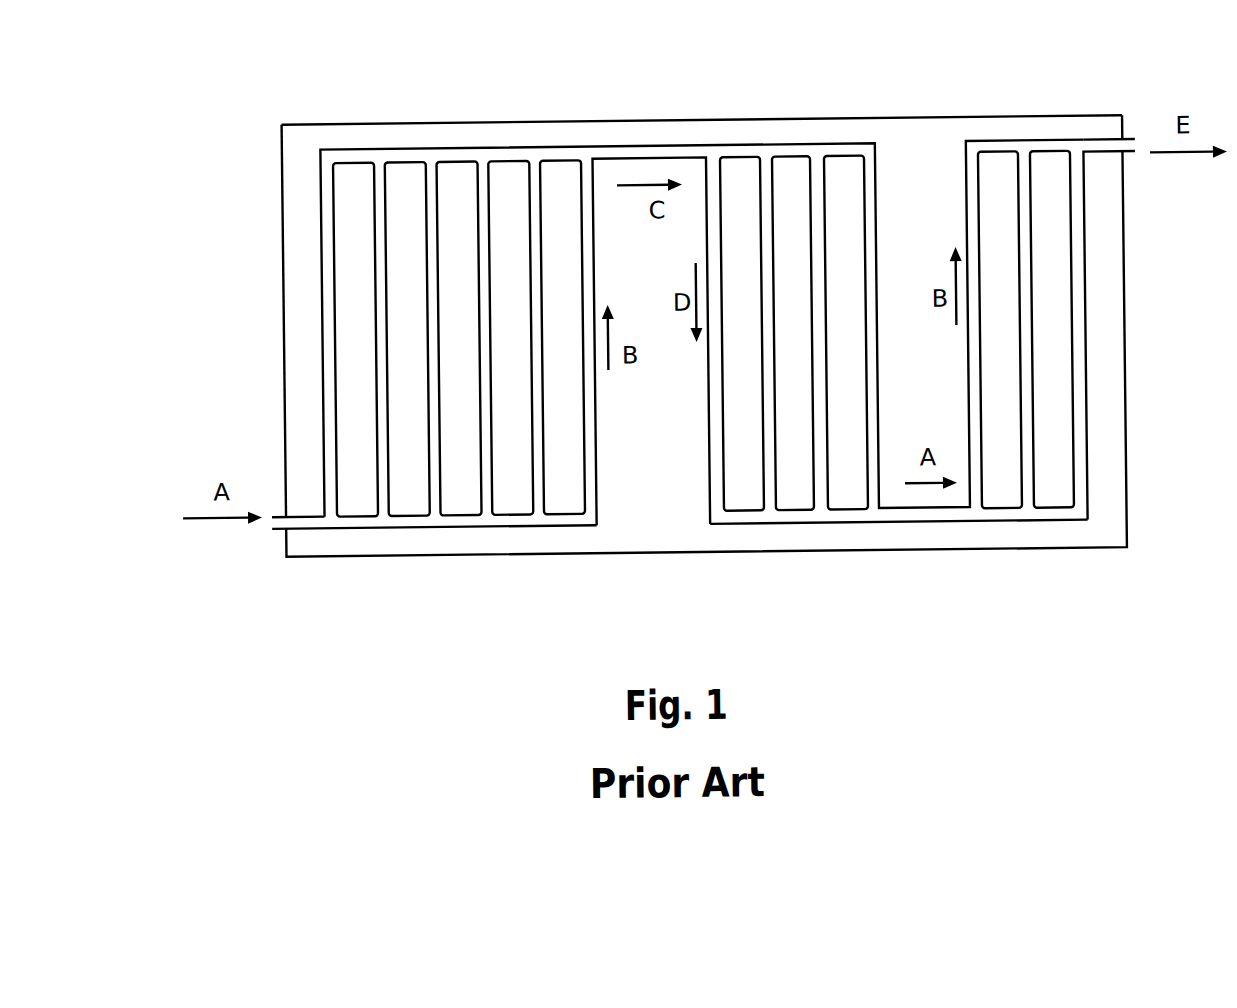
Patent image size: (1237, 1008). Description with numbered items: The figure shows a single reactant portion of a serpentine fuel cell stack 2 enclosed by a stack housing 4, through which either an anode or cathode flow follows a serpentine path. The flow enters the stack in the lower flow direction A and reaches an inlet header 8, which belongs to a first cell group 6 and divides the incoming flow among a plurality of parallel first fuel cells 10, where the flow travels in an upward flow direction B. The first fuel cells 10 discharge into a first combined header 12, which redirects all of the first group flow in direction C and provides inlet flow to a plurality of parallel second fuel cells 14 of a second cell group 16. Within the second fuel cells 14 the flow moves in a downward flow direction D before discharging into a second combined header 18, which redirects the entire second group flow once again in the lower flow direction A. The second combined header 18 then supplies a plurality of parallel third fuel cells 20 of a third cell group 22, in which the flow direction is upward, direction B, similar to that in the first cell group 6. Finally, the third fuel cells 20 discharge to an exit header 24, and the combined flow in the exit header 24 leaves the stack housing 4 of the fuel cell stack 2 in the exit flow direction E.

The serpentine fuel cell stack 2 is at (286, 84).
The stack housing 4 is at (412, 120).
The first cell group 6 is at (502, 173).
The inlet header 8 is at (415, 525).
The first fuel cells 10 is at (451, 485).
The first combined header 12 is at (660, 145).
The second fuel cells 14 is at (838, 487).
The second cell group 16 is at (804, 182).
The second combined header 18 is at (930, 525).
The third fuel cells 20 is at (993, 485).
The third cell group 22 is at (998, 184).
The exit header 24 is at (1099, 144).